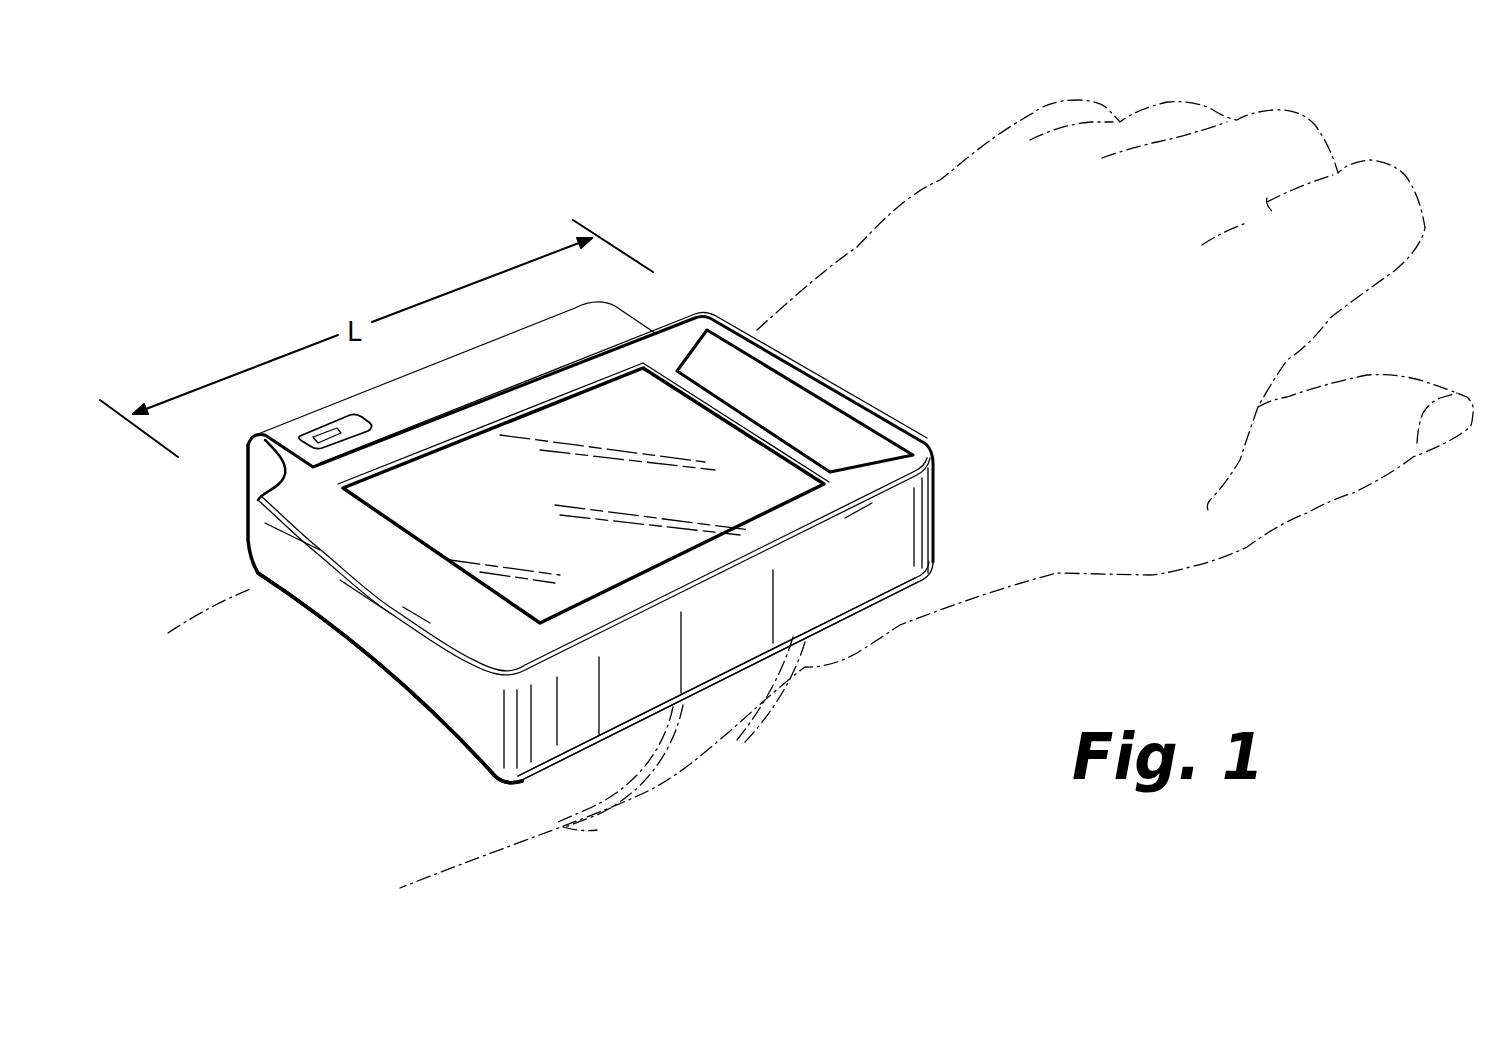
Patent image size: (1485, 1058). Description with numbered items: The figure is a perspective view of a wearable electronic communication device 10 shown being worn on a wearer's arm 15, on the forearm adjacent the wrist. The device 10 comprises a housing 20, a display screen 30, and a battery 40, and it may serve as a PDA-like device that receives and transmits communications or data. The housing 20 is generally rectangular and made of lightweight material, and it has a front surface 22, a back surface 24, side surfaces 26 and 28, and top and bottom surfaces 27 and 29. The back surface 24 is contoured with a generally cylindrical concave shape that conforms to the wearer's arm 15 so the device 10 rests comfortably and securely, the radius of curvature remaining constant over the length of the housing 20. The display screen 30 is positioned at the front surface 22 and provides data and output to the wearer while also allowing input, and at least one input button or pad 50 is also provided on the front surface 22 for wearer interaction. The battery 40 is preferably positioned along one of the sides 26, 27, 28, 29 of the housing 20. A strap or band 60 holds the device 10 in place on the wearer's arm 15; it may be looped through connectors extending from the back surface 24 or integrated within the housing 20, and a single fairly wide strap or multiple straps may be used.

The wearable electronic communication device 10 is at (261, 309).
The wearer's arm 15 is at (620, 767).
The housing 20 is at (883, 557).
The front surface 22 is at (663, 347).
The back surface 24 is at (363, 653).
The side surface 26 is at (845, 362).
The top surface 27 is at (737, 620).
The side surface 28 is at (420, 667).
The bottom surface 29 is at (480, 345).
The display screen 30 is at (737, 490).
The battery 40 is at (275, 450).
The input button or pad 50 is at (823, 433).
The strap or band 60 is at (720, 715).